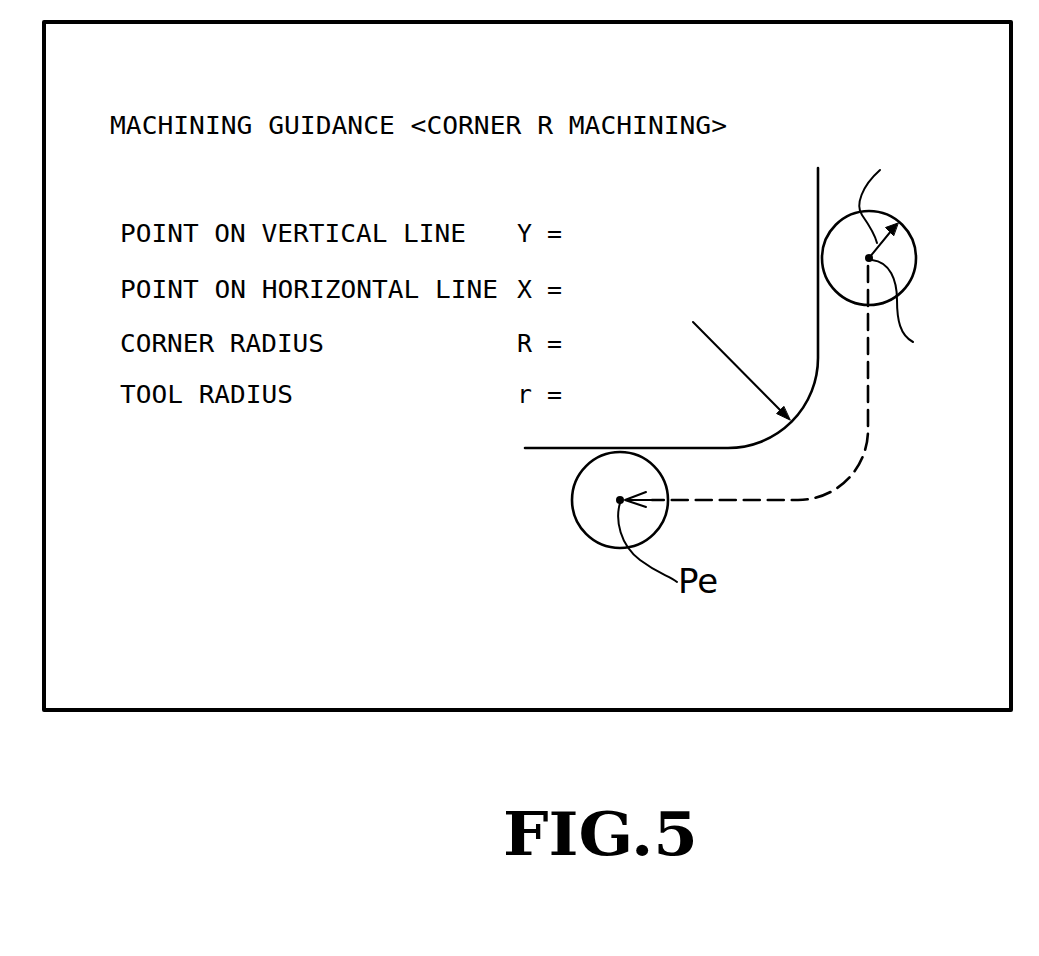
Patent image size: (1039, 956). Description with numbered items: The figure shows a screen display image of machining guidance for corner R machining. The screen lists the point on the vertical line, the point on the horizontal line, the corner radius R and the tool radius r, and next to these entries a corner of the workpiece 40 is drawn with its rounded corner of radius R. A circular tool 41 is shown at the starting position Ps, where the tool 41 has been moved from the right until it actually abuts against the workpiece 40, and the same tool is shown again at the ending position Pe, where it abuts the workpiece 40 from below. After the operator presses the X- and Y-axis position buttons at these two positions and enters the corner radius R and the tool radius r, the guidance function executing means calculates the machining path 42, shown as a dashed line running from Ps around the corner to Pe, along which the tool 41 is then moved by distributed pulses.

The workpiece 40 is at (821, 177).
The tool 41 is at (917, 256).
The machining path 42 is at (850, 452).